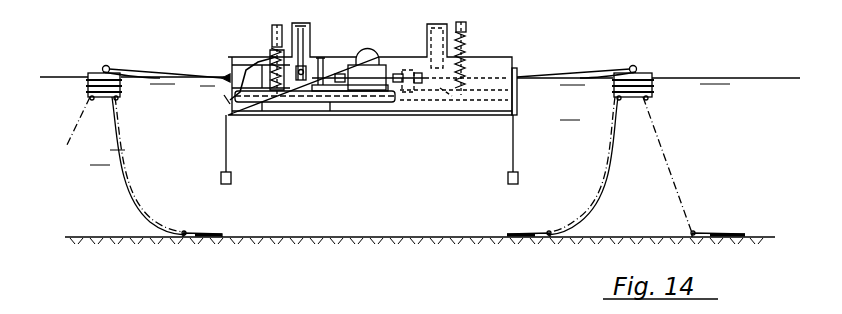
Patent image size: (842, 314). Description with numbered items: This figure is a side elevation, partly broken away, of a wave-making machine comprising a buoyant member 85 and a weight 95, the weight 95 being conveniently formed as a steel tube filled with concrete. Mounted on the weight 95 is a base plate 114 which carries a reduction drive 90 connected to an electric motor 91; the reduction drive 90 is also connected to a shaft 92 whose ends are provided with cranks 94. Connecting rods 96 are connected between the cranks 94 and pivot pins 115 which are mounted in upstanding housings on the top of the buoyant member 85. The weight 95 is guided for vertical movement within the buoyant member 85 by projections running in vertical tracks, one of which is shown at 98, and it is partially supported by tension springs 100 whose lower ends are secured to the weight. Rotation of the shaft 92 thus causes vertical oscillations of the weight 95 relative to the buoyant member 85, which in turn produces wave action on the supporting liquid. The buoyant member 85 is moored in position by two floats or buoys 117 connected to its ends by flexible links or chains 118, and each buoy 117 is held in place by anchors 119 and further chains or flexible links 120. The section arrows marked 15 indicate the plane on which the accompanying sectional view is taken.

The section line of FIG. 15 is at (440, 14).
The buoyant member 85 is at (506, 57).
The reduction drive 90 is at (378, 80).
The electric motor 91 is at (366, 53).
The shaft 92 is at (418, 92).
The crank 94 is at (300, 82).
The weight 95 is at (257, 103).
The connecting rod 96 is at (308, 38).
The vertical track 98 is at (227, 106).
The tension spring 100 is at (275, 63).
The base plate 114 is at (350, 92).
The pivot pin 115 is at (297, 36).
The float 117 is at (97, 72).
The flexible link 118 is at (116, 67).
The anchor 119 is at (208, 234).
The chain 120 is at (128, 180).